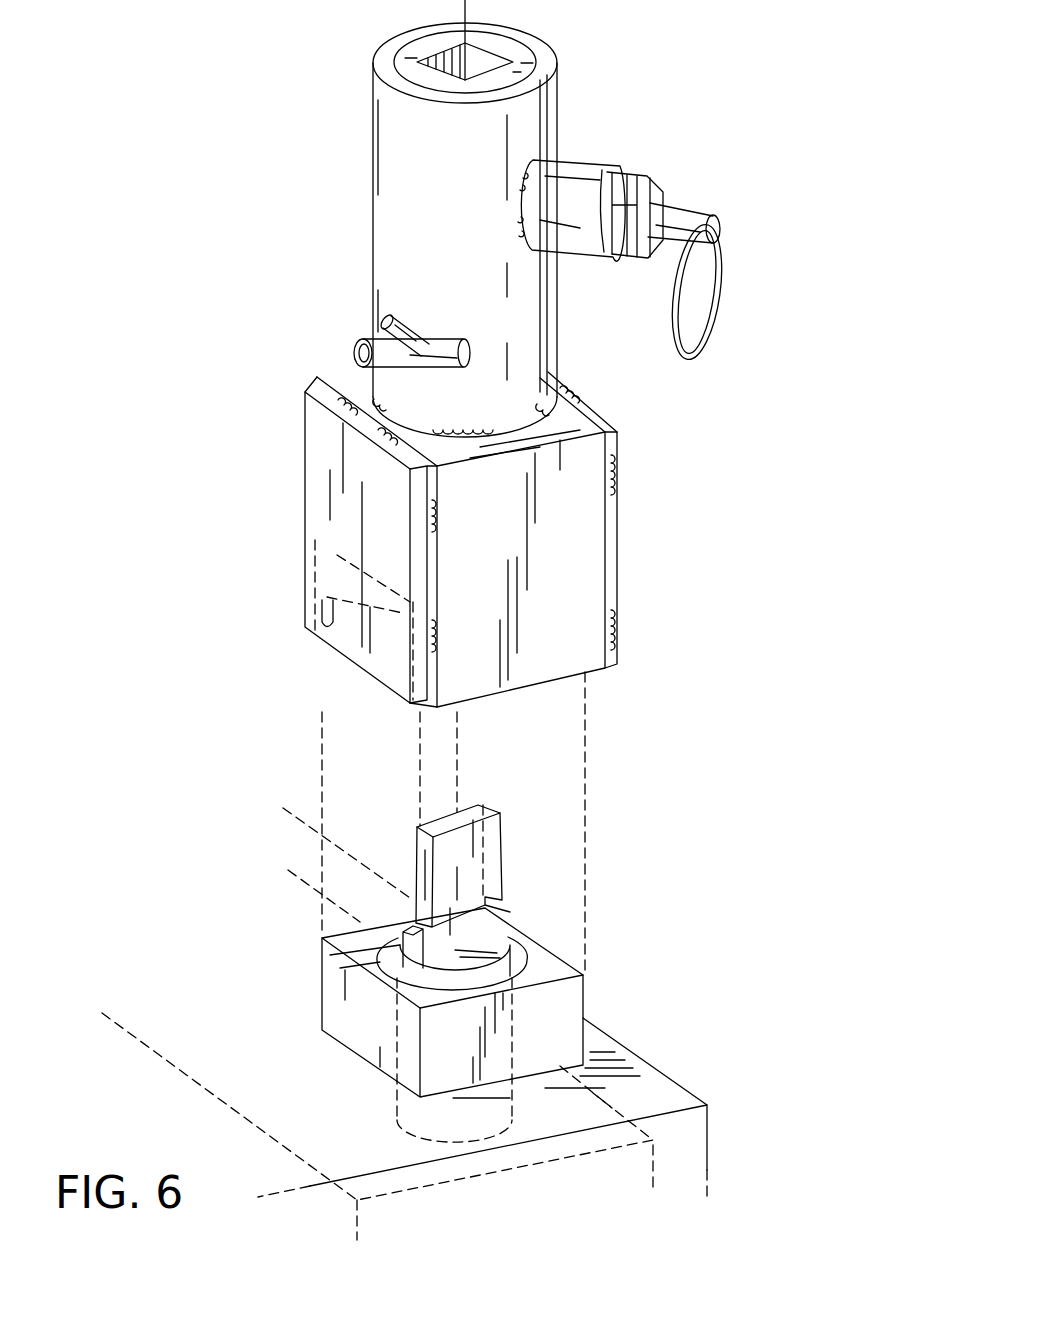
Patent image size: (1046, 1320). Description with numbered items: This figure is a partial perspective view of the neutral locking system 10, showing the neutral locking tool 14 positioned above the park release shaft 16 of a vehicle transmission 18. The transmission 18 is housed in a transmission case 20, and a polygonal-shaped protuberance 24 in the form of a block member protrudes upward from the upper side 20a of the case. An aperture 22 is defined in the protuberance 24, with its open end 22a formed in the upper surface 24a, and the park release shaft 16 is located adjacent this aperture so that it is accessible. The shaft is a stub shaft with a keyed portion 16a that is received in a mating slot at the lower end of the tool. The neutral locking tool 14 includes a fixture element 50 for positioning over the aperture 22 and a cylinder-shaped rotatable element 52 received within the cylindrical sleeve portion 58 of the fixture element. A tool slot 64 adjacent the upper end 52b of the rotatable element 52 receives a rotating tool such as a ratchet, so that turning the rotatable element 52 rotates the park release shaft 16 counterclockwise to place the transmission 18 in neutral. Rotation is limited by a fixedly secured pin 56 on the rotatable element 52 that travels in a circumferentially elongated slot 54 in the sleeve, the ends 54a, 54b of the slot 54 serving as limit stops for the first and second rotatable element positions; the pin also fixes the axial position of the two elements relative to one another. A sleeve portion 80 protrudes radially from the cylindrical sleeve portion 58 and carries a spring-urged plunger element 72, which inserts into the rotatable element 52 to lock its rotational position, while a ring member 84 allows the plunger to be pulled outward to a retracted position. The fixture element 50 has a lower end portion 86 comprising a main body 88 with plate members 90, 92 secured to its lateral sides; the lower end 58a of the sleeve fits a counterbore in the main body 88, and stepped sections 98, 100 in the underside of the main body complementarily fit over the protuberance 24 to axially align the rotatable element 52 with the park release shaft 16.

The neutral locking system 10 is at (704, 657).
The neutral locking tool 14 is at (291, 292).
The park release shaft 16 is at (422, 975).
The keyed portion 16a is at (493, 833).
The transmission 18 is at (670, 1052).
The transmission case 20 is at (687, 1143).
The upper side of the transmission case 20a is at (672, 1098).
The aperture 22 is at (510, 936).
The open end of the aperture 22a is at (522, 977).
The protuberance 24 is at (570, 1005).
The upper surface of the protuberance 24a is at (345, 945).
The fixture element 50 is at (634, 452).
The rotatable element 52 is at (403, 74).
The upper end of the rotatable element 52b is at (518, 58).
The circumferentially elongated slot 54 is at (441, 345).
The end of the slot 54a is at (455, 362).
The end of the slot 54b is at (415, 330).
The fixedly secured pin 56 is at (354, 357).
The cylindrical sleeve portion 58 is at (552, 118).
The lower end of the cylindrical sleeve portion 58a is at (400, 418).
The tool slot 64 is at (482, 58).
The plunger element 72 is at (676, 210).
The sleeve portion 80 is at (590, 178).
The ring member 84 is at (706, 330).
The lower end portion 86 is at (605, 575).
The main body 88 is at (560, 662).
The plate member 90 is at (318, 488).
The plate member 92 is at (622, 535).
The stepped section 98 is at (320, 640).
The stepped section 100 is at (343, 580).